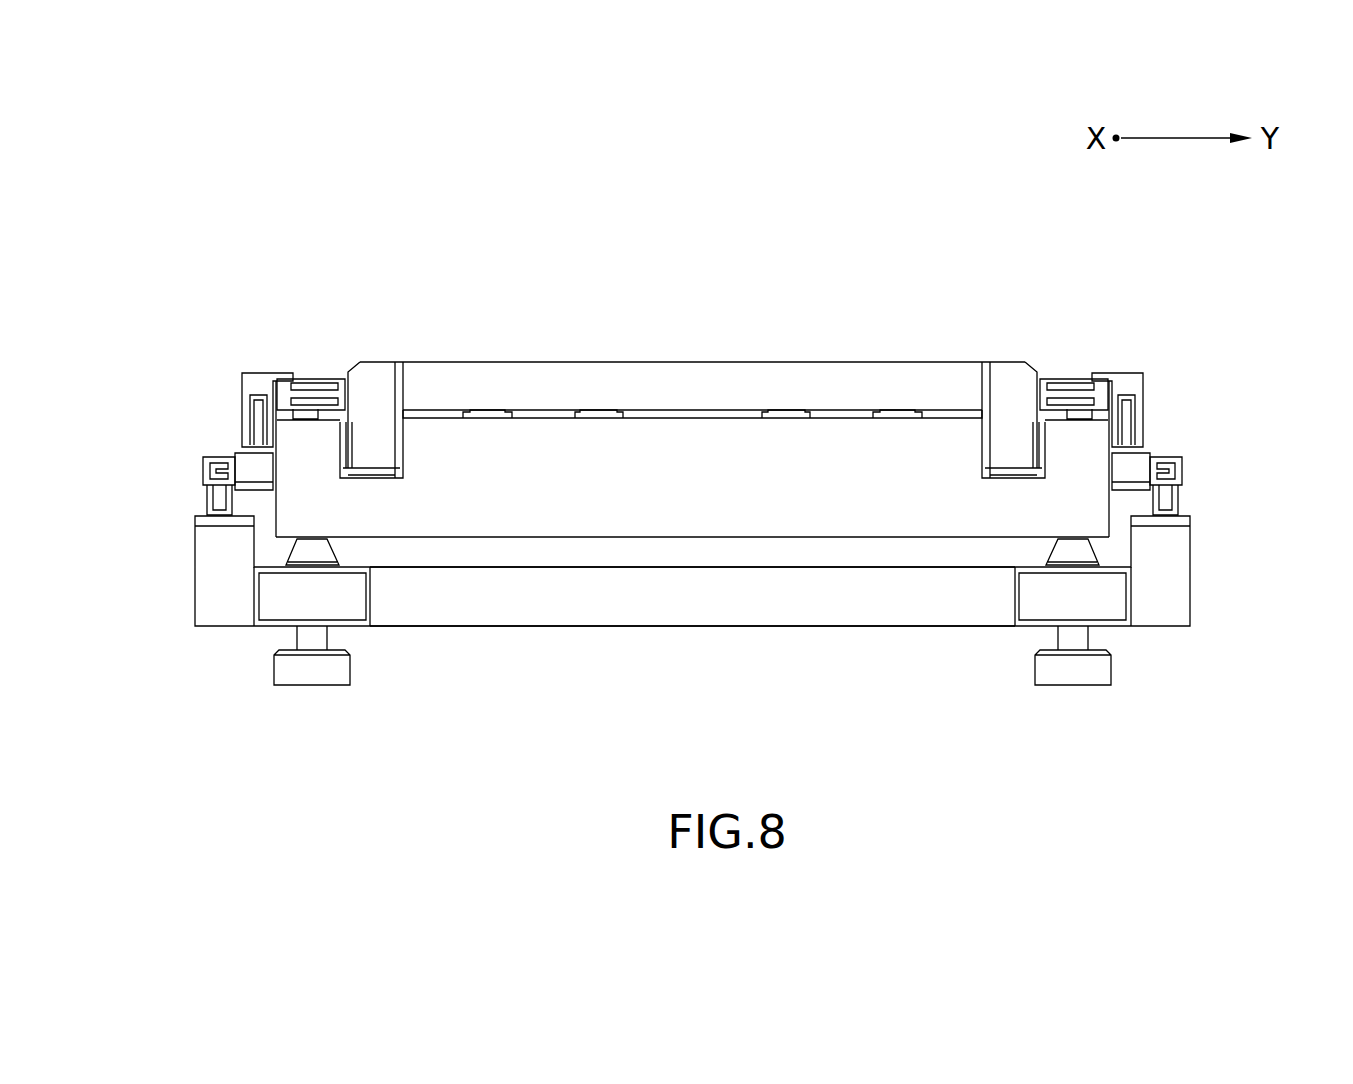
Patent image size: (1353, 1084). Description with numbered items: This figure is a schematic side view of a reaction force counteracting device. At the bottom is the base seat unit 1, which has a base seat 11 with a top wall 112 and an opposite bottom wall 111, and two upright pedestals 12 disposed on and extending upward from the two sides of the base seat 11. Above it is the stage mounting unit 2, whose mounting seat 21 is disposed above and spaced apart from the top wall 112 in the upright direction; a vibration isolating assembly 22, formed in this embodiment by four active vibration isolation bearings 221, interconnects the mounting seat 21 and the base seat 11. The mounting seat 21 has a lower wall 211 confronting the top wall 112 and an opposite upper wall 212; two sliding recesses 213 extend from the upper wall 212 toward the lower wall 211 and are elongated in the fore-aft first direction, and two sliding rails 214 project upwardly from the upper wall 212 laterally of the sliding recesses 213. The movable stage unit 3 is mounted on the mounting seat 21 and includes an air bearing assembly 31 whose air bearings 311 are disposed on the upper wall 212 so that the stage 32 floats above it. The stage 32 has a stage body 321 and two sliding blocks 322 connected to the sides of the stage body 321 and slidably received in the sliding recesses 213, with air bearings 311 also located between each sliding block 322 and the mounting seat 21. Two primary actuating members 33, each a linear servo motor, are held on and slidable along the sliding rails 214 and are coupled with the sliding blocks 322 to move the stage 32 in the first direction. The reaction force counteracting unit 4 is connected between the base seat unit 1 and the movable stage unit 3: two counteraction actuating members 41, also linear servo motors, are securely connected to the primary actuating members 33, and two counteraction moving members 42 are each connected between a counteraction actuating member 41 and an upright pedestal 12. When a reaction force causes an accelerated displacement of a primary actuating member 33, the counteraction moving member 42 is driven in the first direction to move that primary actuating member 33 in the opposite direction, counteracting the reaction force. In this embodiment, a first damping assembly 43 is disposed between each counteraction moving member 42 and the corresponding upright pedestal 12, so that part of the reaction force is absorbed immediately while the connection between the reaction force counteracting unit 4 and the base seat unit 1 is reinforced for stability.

The base seat unit 1 is at (1200, 605).
The base seat 11 is at (555, 600).
The bottom wall 111 is at (758, 627).
The top wall 112 is at (845, 567).
The upright pedestal 12 is at (205, 580).
The stage mounting unit 2 is at (638, 539).
The mounting seat 21 is at (747, 440).
The lower wall 211 is at (478, 537).
The upper wall 212 is at (712, 450).
The sliding recess 213 is at (385, 518).
The sliding rail 214 is at (302, 392).
The vibration isolating assembly 22 is at (711, 647).
The active vibration isolation bearing 221 is at (305, 553).
The movable stage unit 3 is at (890, 362).
The air bearing assembly 31 is at (693, 360).
The air bearing 311 is at (485, 412).
The stage 32 is at (588, 392).
The stage body 321 is at (640, 400).
The sliding block 322 is at (372, 420).
The primary actuating member 33 is at (327, 377).
The reaction force counteracting unit 4 is at (1156, 379).
The counteraction actuating member 41 is at (258, 385).
The counteraction moving member 42 is at (265, 468).
The first damping assembly 43 is at (203, 476).